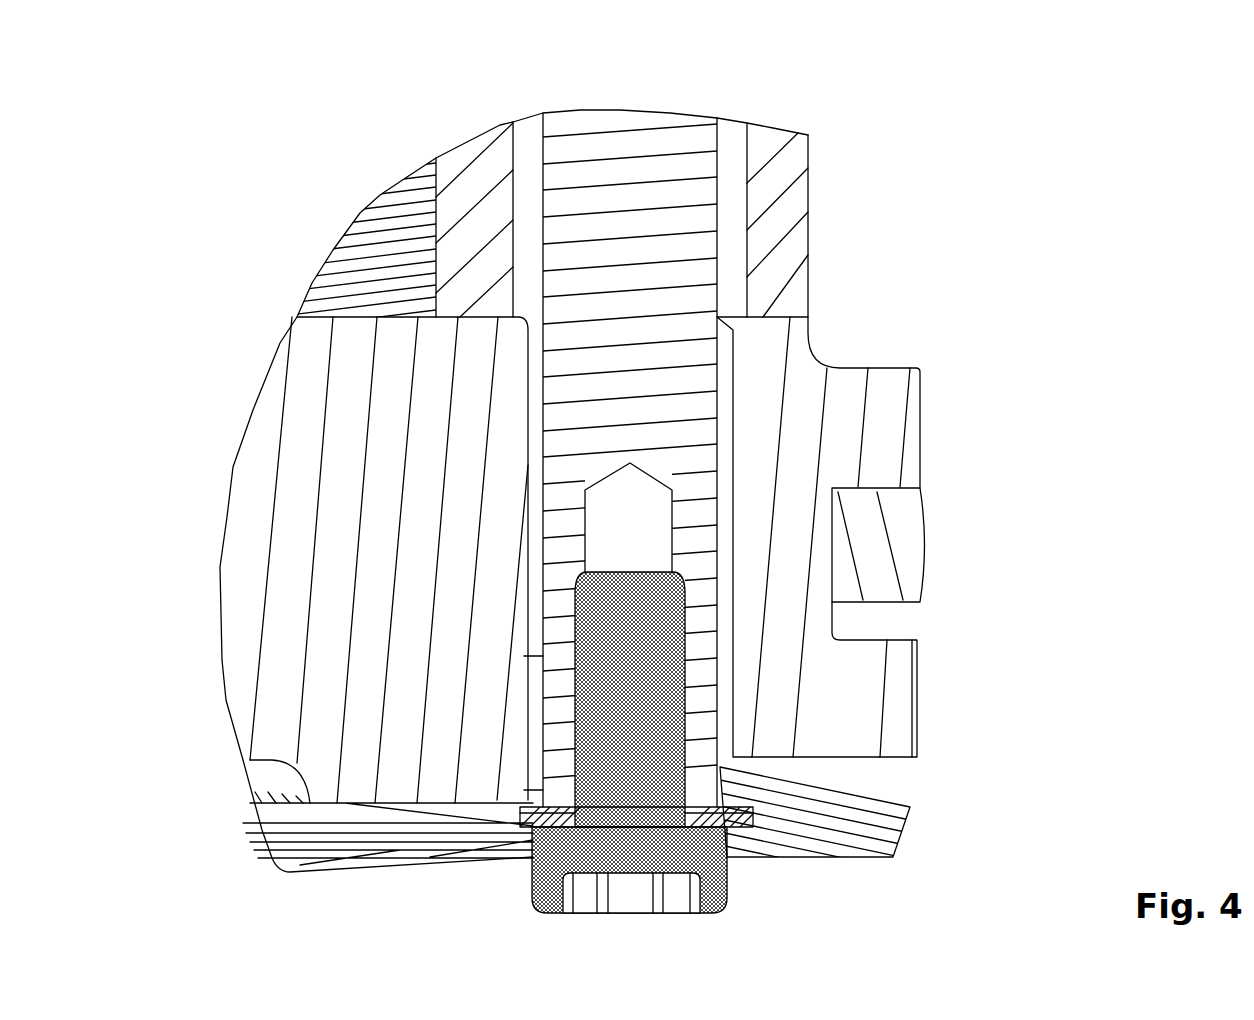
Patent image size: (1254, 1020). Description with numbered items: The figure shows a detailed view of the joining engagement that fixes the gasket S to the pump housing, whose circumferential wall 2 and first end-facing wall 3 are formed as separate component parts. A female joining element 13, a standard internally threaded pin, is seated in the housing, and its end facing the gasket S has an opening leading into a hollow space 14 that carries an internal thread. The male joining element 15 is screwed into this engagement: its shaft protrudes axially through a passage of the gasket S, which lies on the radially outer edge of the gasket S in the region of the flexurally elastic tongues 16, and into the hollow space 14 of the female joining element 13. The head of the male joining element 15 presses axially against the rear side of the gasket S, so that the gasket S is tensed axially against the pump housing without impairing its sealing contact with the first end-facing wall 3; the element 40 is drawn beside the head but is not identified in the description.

The insert body 2 is at (478, 178).
The holder body 3 is at (260, 515).
The mounting element 13 is at (667, 300).
The bore 14 is at (643, 523).
The screw 15 is at (643, 698).
The screw head 16 is at (737, 830).
The support plate 40 is at (870, 833).
The cutting system S is at (263, 870).